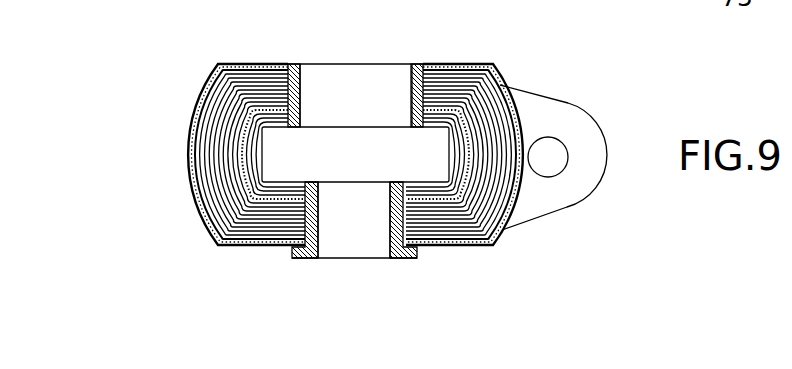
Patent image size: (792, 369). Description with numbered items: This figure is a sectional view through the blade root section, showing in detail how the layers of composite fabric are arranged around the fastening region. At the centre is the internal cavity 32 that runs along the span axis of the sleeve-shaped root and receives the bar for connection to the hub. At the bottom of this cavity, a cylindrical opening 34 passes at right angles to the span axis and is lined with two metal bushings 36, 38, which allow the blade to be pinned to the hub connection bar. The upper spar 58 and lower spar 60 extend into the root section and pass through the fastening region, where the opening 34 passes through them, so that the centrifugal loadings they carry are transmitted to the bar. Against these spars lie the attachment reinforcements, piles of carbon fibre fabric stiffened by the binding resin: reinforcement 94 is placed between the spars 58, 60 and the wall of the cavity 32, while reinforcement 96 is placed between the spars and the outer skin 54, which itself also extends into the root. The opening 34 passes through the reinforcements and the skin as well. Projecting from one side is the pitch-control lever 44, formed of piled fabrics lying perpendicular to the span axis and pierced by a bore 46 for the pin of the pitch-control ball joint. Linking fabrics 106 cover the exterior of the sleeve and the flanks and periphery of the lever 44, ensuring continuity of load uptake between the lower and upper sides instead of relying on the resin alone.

The internal cavity 32 is at (382, 147).
The cylindrical opening 34 is at (395, 80).
The metal bushing 36 is at (303, 68).
The metal bushing 38 is at (300, 254).
The pitch-control lever 44 is at (547, 195).
The bore 46 is at (553, 155).
The outer skin 54 is at (225, 245).
The upper spar 58 is at (265, 115).
The lower spar 60 is at (243, 185).
The attachment reinforcement 94 is at (355, 154).
The attachment reinforcement 96 is at (207, 83).
The linking fabrics 106 is at (188, 118).